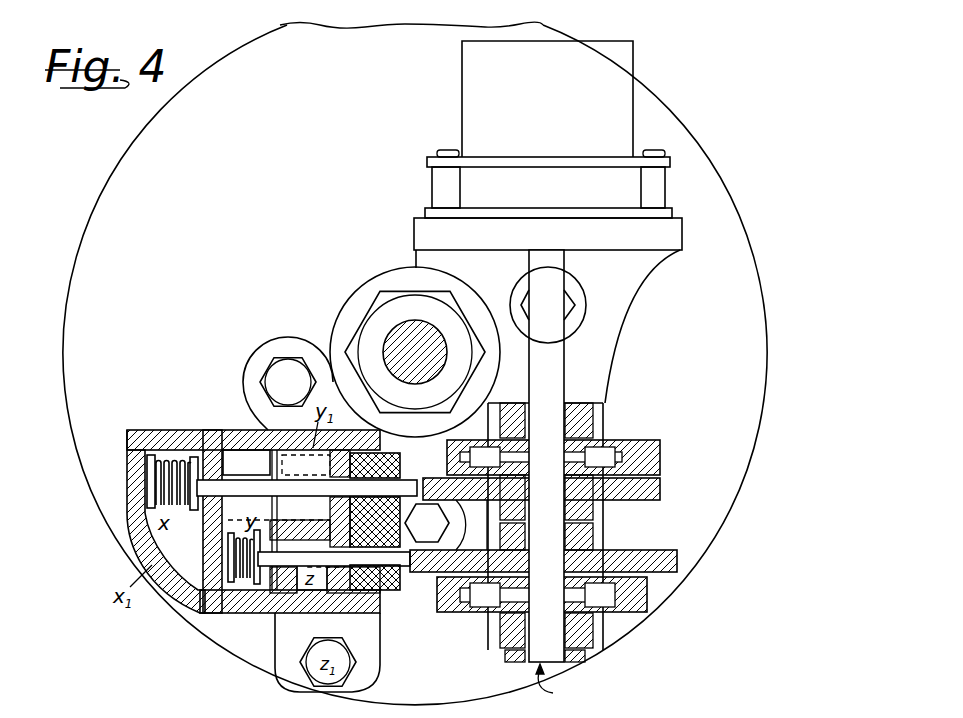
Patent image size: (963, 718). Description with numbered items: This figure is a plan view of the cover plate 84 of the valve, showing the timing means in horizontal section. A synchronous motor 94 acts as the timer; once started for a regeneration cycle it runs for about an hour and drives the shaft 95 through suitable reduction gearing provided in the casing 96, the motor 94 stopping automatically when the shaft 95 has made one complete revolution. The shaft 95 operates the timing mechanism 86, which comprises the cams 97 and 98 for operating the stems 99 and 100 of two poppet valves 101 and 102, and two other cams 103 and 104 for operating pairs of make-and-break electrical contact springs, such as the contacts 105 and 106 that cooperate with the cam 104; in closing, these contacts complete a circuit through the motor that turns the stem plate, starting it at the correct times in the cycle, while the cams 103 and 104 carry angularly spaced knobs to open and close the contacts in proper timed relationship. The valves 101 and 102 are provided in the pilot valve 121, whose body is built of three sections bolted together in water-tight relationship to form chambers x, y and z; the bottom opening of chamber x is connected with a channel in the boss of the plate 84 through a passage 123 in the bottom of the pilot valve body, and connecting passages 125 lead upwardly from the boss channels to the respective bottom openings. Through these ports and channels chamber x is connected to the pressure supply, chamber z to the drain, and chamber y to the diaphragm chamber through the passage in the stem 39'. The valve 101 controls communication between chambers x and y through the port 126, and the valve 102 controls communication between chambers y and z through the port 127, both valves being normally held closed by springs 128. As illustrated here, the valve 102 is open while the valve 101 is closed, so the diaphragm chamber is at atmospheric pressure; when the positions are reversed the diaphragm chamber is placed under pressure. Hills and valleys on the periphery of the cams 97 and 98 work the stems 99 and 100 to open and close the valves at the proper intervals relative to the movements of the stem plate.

The synchronous motor 94 is at (627, 70).
The casing 96 is at (548, 276).
The shaft 95 is at (557, 353).
The plate 84 is at (753, 382).
The stem 39' is at (398, 352).
The pilot valve 121 is at (143, 428).
The port 126 is at (165, 462).
The poppet valve 101 is at (146, 481).
The springs 128 is at (145, 510).
The passage 123 is at (246, 463).
The connecting passages 125 is at (307, 491).
The stem 99 is at (398, 482).
The cam 103 is at (662, 441).
The cam 97 is at (660, 493).
The cam 98 is at (650, 553).
The cam 104 is at (647, 588).
The electrical contact spring 105 is at (537, 450).
The electrical contact spring 106 is at (555, 473).
The stem 100 is at (410, 568).
The port 127 is at (275, 617).
The poppet valve 102 is at (227, 618).
The timing mechanism 86 is at (558, 687).